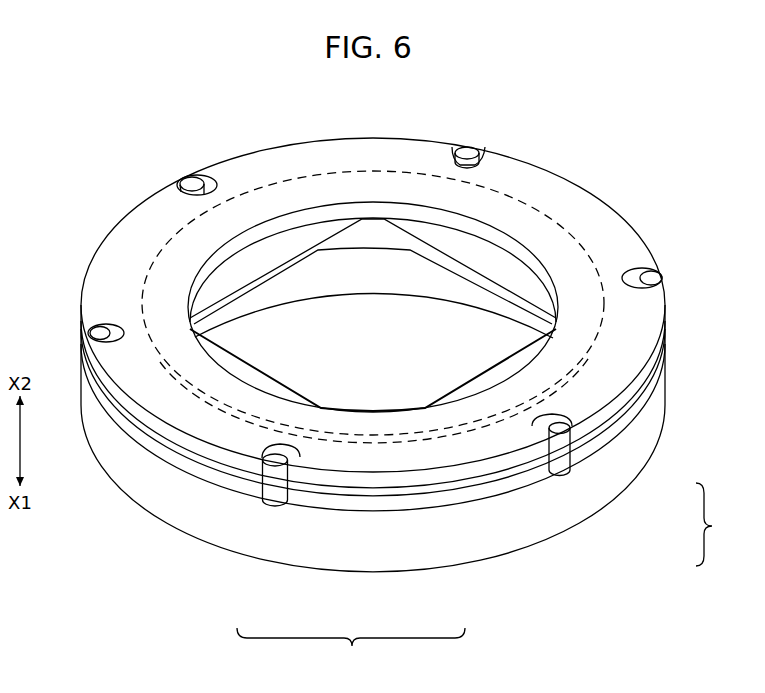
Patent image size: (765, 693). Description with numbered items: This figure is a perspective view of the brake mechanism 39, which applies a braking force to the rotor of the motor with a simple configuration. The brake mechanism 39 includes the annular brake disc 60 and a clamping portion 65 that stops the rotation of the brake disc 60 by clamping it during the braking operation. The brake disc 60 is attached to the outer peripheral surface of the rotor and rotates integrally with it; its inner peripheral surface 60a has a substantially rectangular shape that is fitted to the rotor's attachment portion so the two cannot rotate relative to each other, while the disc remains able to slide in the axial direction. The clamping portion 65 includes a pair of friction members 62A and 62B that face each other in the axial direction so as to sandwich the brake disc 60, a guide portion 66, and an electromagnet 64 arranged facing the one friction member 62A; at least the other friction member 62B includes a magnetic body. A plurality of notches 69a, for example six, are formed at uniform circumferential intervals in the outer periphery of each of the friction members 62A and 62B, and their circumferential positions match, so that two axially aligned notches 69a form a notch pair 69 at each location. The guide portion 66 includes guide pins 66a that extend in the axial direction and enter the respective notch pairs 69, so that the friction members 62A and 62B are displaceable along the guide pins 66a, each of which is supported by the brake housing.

The brake mechanism 39 is at (231, 137).
The brake disc 60 is at (545, 213).
The inner peripheral surface 60a is at (441, 262).
The friction member 62A is at (397, 503).
The friction member 62B is at (350, 482).
The electromagnet 64 is at (442, 552).
The clamping portion 65 is at (351, 650).
The guide portion 66 is at (269, 506).
The guide pin 66a is at (472, 151).
The notch pair 69 is at (717, 524).
The notch 69a is at (572, 432).